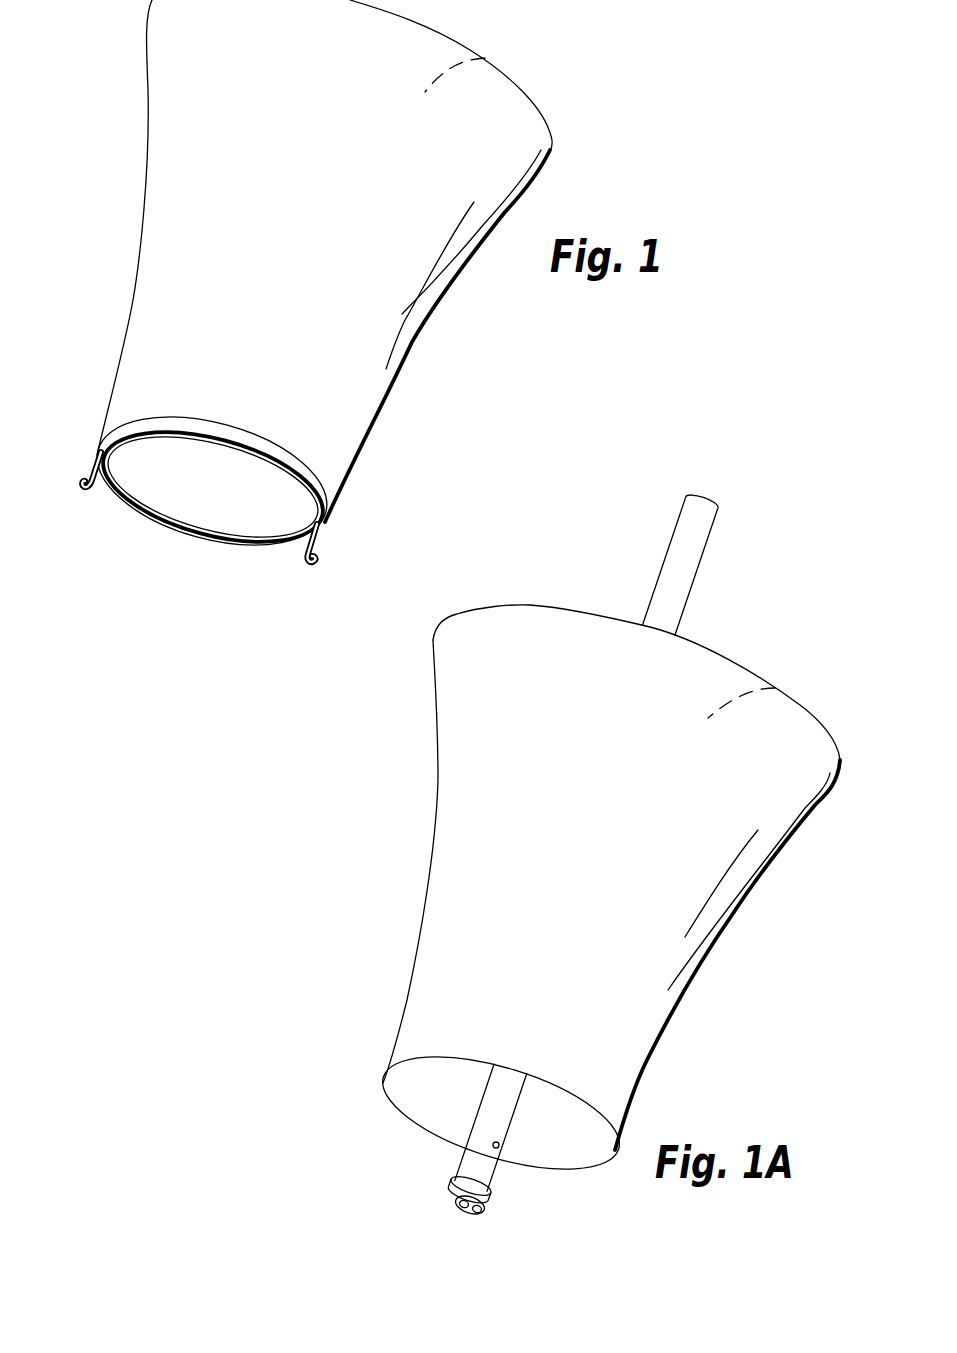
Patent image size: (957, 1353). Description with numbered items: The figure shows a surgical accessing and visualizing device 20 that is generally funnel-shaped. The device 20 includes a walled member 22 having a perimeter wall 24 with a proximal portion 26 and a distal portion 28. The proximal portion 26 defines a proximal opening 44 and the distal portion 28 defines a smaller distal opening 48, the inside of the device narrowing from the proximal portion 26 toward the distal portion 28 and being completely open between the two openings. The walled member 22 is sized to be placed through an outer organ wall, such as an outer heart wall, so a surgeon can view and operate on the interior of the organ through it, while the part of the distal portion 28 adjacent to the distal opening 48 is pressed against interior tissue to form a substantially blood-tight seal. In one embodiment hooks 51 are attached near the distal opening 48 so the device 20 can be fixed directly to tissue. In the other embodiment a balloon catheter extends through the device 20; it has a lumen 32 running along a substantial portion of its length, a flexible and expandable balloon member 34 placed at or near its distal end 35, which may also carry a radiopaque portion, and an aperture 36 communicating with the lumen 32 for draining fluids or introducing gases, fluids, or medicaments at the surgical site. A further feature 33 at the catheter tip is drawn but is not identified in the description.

In FIG. 1, the surgical accessing and visualizing device 20 is at (98, 184).
In FIG. 1A, the surgical accessing and visualizing device 20 is at (402, 763).
In FIG. 1, the walled member 22 is at (128, 312).
In FIG. 1A, the walled member 22 is at (415, 939).
In FIG. 1, the perimeter wall 24 is at (347, 353).
In FIG. 1A, the perimeter wall 24 is at (630, 1020).
In FIG. 1, the proximal portion 26 is at (168, 105).
In FIG. 1A, the proximal portion 26 is at (576, 631).
In FIG. 1, the distal portion 28 is at (333, 452).
In FIG. 1A, the distal portion 28 is at (427, 1003).
In FIG. 1A, the lumen 32 is at (452, 1191).
In FIG. 1A, the aperture in end cap 33 is at (476, 1217).
In FIG. 1A, the balloon member 34 is at (493, 1200).
In FIG. 1A, the distal end 35 is at (456, 1210).
In FIG. 1A, the aperture 36 is at (500, 1149).
In FIG. 1, the proximal opening 44 is at (480, 58).
In FIG. 1A, the proximal opening 44 is at (777, 688).
In FIG. 1, the distal opening 48 is at (203, 498).
In FIG. 1A, the distal opening 48 is at (425, 1087).
In FIG. 1, the hooks 51 is at (93, 458).